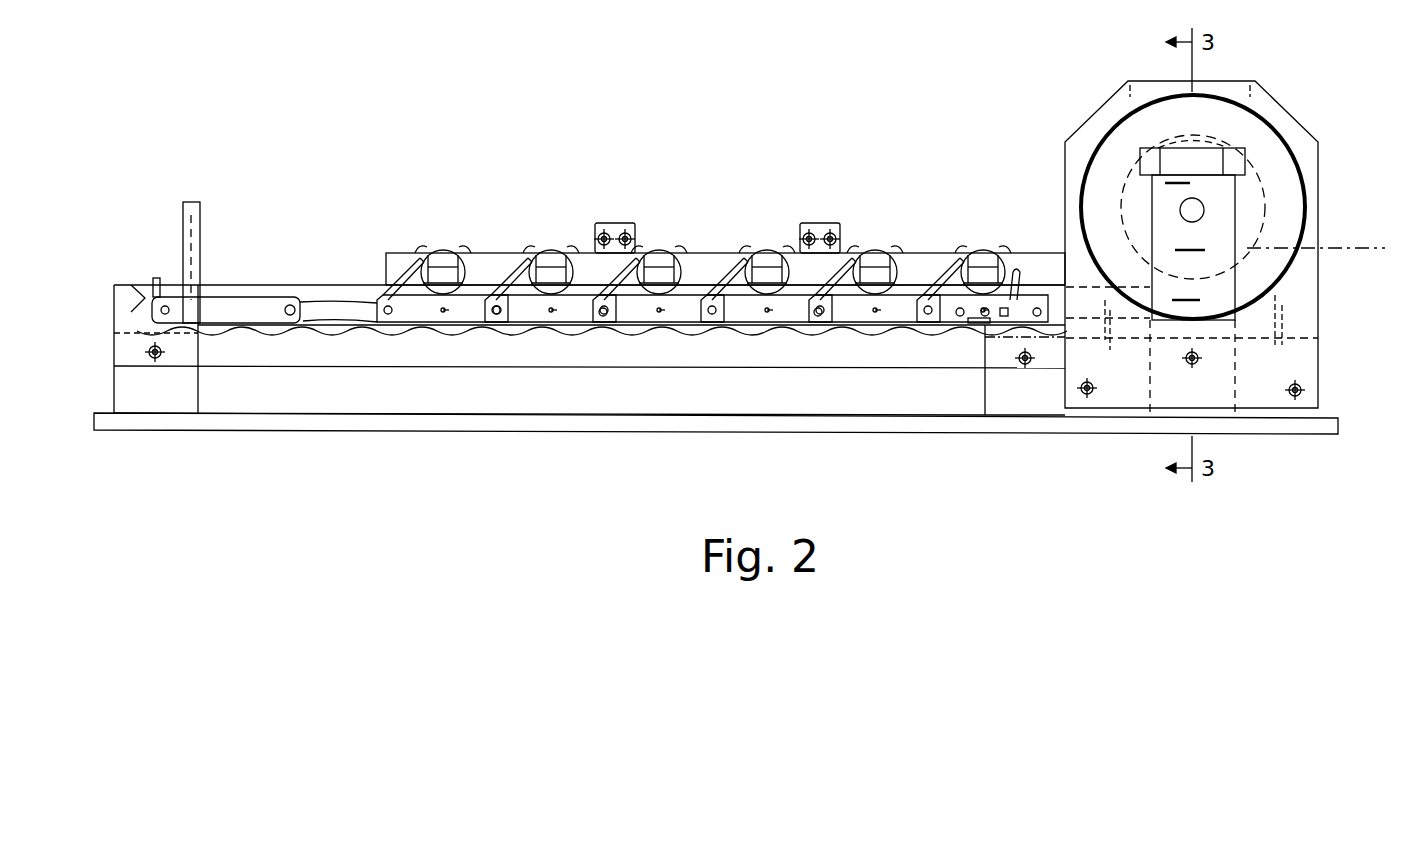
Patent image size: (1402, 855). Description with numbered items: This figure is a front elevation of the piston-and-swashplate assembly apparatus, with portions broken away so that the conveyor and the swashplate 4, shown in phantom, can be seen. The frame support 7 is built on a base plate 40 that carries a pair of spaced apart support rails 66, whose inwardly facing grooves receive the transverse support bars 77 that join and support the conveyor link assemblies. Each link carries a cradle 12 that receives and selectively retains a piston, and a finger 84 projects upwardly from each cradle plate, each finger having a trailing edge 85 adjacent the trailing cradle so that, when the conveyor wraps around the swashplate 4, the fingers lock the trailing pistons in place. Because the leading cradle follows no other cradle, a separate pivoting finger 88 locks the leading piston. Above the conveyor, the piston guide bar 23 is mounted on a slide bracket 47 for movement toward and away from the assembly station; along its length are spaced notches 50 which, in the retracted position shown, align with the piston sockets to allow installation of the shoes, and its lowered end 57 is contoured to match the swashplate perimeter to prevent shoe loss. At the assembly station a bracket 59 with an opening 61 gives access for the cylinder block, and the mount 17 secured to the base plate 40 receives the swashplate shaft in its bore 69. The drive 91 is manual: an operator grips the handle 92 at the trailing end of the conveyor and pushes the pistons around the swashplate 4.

The swashplate 4 is at (1324, 250).
The frame support 7 is at (1334, 349).
The cradle 12 is at (422, 253).
The mount 17 is at (1140, 192).
The piston guide bar 23 is at (477, 253).
The base plate 40 is at (396, 432).
The slide bracket 47 is at (823, 223).
The notch 50 is at (873, 247).
The lowered end 57 is at (1160, 283).
The bracket 59 is at (1287, 110).
The opening 61 is at (1300, 212).
The support rail 66 is at (262, 368).
The bore 69 is at (1202, 212).
The transverse support bar 77 is at (603, 318).
The finger 84 is at (417, 262).
The trailing edge 85 is at (617, 253).
The pivoting finger 88 is at (1015, 272).
The drive 91 is at (214, 203).
The handle 92 is at (185, 226).